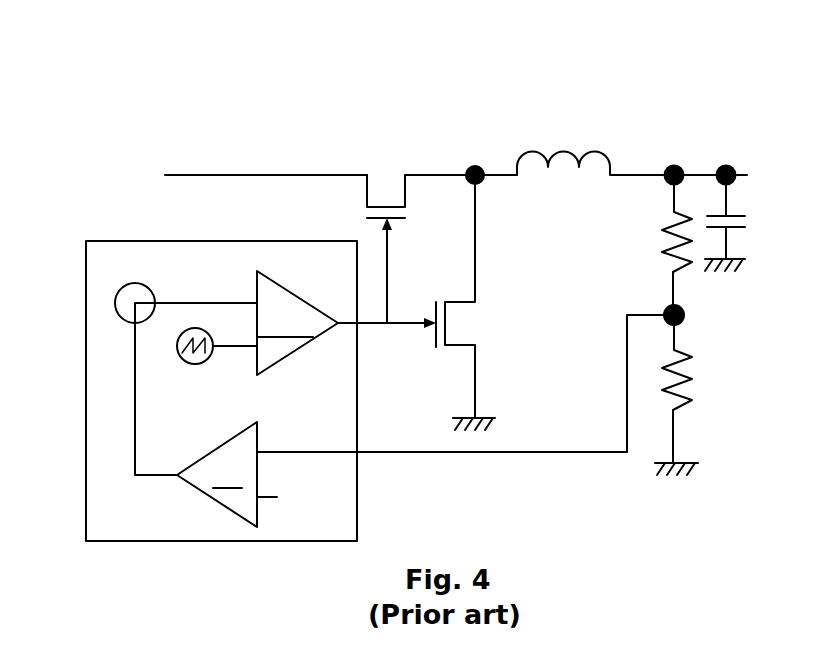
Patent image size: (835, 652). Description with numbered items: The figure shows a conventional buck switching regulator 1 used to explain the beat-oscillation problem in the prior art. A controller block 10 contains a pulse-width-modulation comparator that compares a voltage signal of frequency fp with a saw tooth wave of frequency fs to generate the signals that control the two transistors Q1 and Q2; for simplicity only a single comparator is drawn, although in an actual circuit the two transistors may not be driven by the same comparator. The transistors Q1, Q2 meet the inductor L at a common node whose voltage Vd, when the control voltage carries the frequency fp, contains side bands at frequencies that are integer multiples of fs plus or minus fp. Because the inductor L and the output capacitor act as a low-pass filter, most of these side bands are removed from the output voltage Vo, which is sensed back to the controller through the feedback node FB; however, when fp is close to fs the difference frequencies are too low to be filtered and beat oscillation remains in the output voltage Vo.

The buck converter circuit 1 is at (668, 82).
The PWM controller 10 is at (86, 347).
The transistor Q1 is at (442, 230).
The transistor Q2 is at (424, 302).
The inductor L is at (632, 137).
The voltage at the common node Vd is at (483, 155).
The output voltage Vo is at (674, 153).
The feedback node FB is at (495, 377).